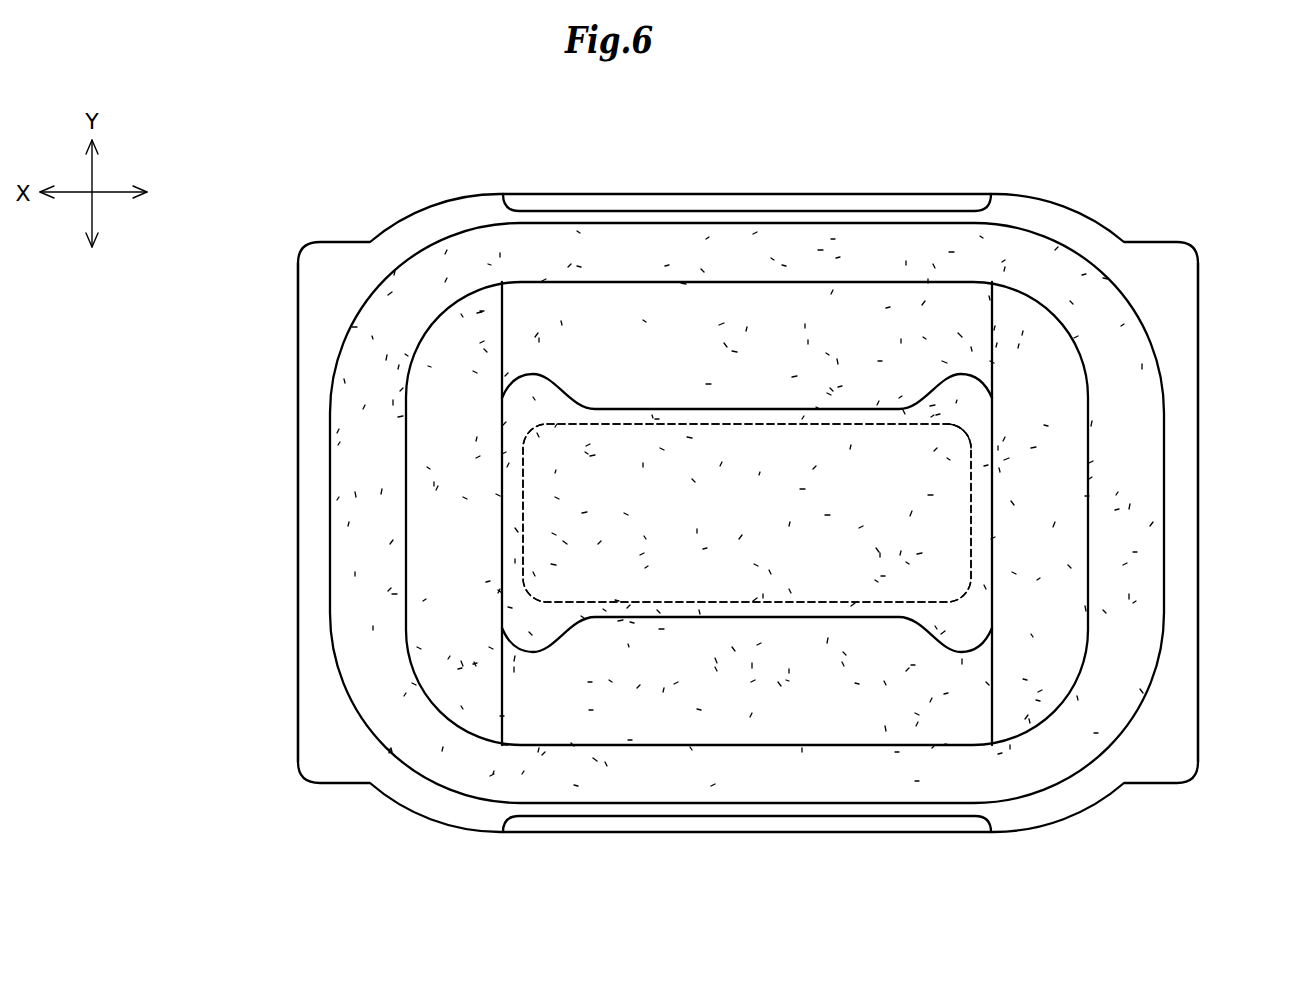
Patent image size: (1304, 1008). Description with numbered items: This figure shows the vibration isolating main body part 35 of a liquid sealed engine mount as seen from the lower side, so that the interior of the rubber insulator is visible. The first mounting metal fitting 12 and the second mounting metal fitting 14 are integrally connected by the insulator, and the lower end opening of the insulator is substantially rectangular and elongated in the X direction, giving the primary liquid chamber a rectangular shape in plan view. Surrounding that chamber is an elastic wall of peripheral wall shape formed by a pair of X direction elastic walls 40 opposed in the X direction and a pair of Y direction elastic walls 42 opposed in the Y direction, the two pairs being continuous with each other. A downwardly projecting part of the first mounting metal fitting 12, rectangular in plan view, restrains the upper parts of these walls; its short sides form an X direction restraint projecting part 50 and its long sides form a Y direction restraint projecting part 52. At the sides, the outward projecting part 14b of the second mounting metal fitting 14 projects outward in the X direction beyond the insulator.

The first mounting metal fitting 12 is at (947, 420).
The second mounting metal fitting 14 is at (297, 292).
The outward projecting part 14b is at (300, 560).
The vibration isolating main body part 35 is at (373, 215).
The X direction elastic wall 40 is at (432, 600).
The Y direction elastic wall 42 is at (666, 322).
The X direction restraint projecting part 50 is at (968, 512).
The Y direction restraint projecting part 52 is at (743, 423).